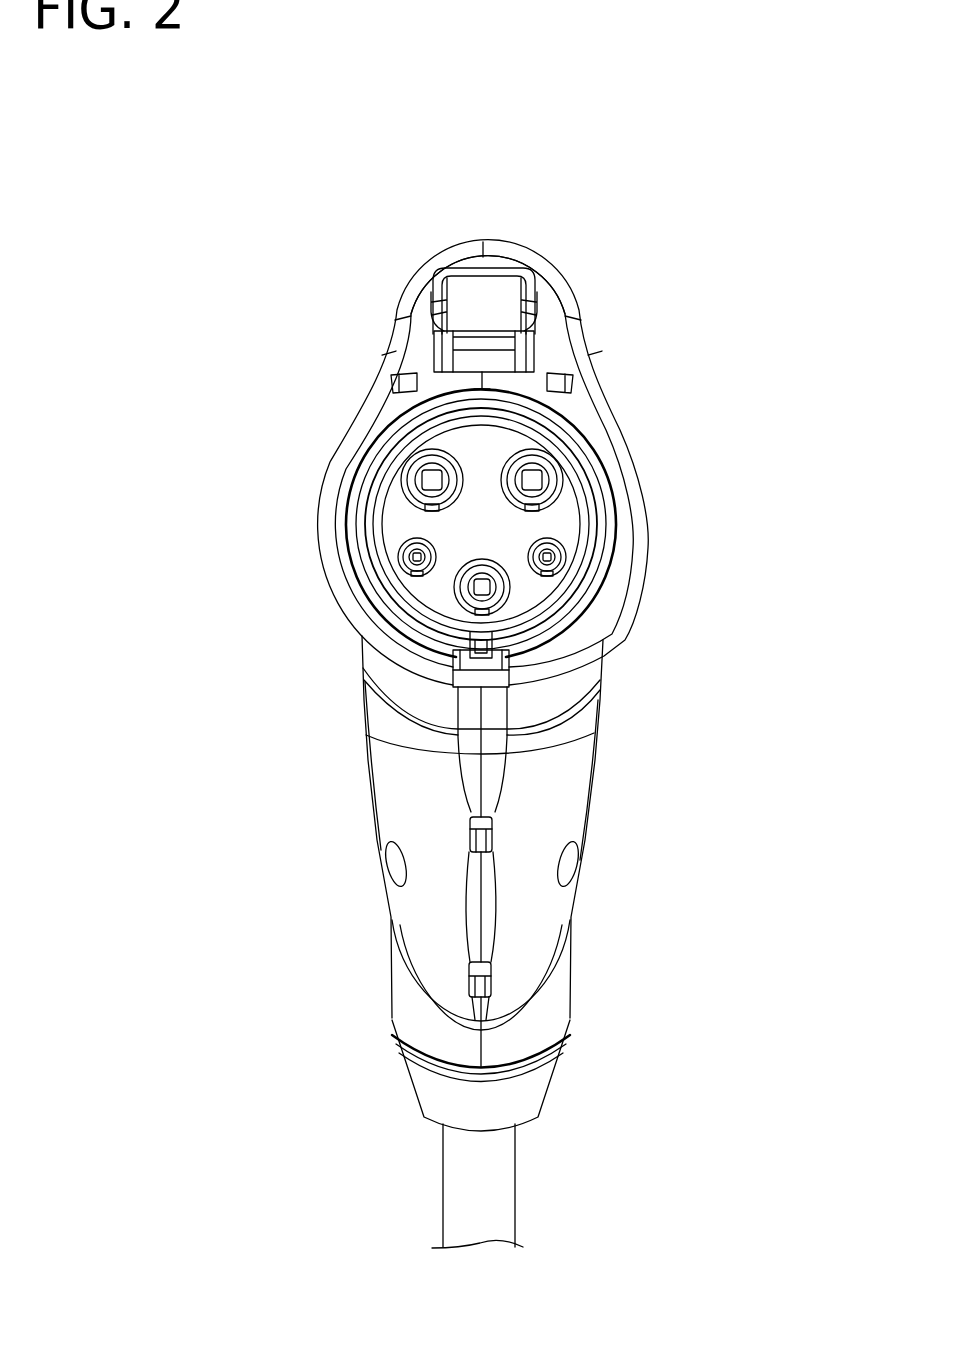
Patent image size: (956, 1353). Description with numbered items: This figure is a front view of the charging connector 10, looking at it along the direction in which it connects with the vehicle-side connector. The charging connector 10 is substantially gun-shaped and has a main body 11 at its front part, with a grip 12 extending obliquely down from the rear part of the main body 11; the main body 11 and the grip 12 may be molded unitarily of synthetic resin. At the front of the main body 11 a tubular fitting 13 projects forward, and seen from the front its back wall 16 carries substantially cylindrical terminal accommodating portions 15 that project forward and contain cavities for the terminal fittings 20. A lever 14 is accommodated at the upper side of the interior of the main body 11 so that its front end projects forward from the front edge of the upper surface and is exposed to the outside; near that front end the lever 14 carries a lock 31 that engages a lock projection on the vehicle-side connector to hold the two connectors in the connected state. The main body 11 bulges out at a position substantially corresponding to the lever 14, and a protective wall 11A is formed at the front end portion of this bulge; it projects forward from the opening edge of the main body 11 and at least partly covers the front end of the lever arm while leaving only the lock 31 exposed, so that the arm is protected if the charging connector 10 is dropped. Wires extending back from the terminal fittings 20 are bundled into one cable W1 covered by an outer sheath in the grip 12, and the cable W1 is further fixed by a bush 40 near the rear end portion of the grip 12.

The charging connector 10 is at (459, 153).
The main body 11 is at (654, 449).
The protective wall 11A is at (495, 250).
The grip 12 is at (622, 787).
The tubular fitting 13 is at (602, 530).
The lever 14 is at (421, 327).
The terminal accommodating portions 15 is at (557, 535).
The back wall 16 is at (532, 590).
The terminal fittings 20 is at (553, 563).
The lock 31 is at (485, 325).
The bush 40 is at (532, 1088).
The cable W1 is at (500, 1193).